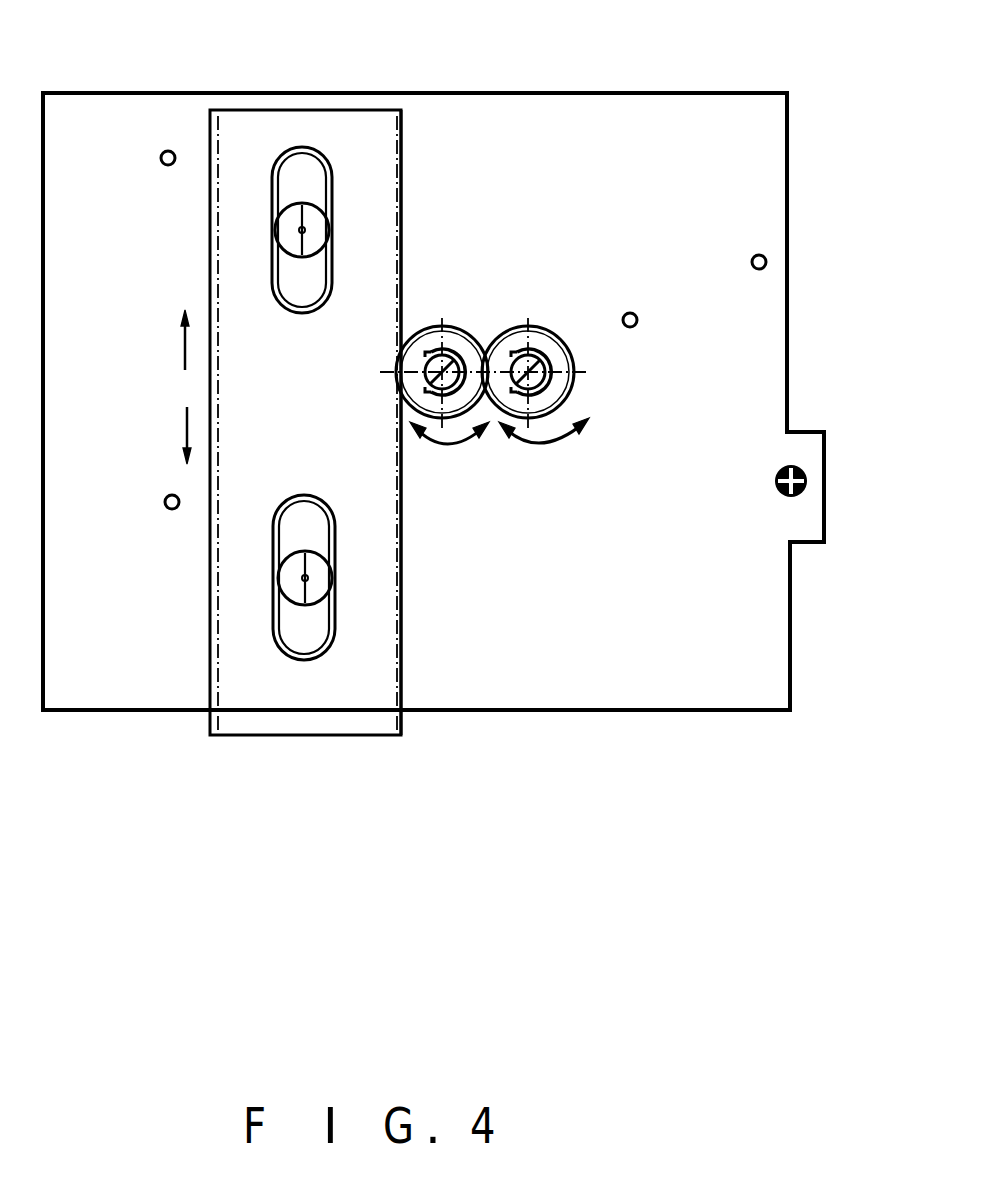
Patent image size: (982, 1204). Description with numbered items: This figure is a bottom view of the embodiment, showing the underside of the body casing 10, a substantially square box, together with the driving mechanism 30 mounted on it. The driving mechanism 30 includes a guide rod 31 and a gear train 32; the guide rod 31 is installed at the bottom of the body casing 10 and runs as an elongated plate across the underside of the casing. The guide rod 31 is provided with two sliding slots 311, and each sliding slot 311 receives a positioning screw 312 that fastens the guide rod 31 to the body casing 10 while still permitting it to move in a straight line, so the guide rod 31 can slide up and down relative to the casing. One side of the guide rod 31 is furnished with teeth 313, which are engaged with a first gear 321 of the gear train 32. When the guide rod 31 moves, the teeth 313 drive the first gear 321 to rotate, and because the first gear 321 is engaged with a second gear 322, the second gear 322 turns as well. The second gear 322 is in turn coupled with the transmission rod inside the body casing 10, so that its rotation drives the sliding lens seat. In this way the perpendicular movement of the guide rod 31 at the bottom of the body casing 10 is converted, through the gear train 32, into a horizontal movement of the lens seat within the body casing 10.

The body casing 10 is at (790, 688).
The driving mechanism 30 is at (412, 136).
The guide rod 31 is at (363, 715).
The sliding slot 311 is at (305, 638).
The positioning screw 312 is at (290, 587).
The teeth 313 is at (400, 634).
The gear train 32 is at (597, 311).
The first gear 321 is at (450, 325).
The second gear 322 is at (542, 325).